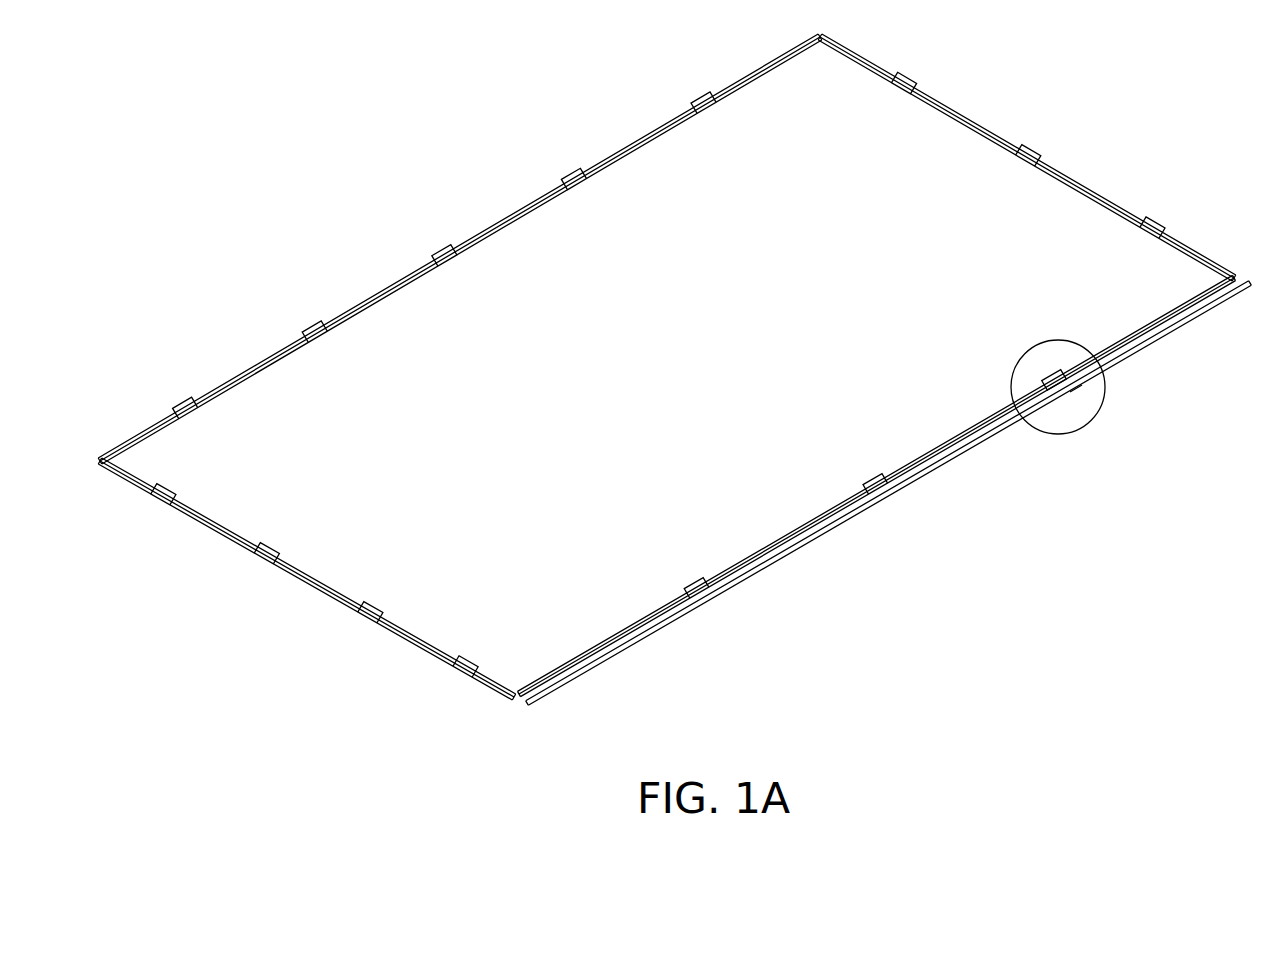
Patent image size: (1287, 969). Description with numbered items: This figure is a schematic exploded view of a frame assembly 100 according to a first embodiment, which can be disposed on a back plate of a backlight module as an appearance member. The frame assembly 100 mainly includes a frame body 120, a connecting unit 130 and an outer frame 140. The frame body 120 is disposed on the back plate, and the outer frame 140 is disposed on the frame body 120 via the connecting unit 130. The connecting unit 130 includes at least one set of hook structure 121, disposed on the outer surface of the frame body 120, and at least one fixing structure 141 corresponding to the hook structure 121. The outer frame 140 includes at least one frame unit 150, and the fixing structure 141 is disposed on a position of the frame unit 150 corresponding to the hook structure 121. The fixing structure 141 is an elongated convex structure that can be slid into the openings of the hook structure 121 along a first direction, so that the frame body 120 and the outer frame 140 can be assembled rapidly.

The frame assembly 100 is at (277, 125).
The frame body 120 is at (425, 668).
The hook structure 121 is at (1085, 377).
The connecting unit 130 is at (1202, 397).
The outer frame 140 is at (550, 703).
The fixing structure 141 is at (1072, 393).
The frame unit 150 is at (735, 584).